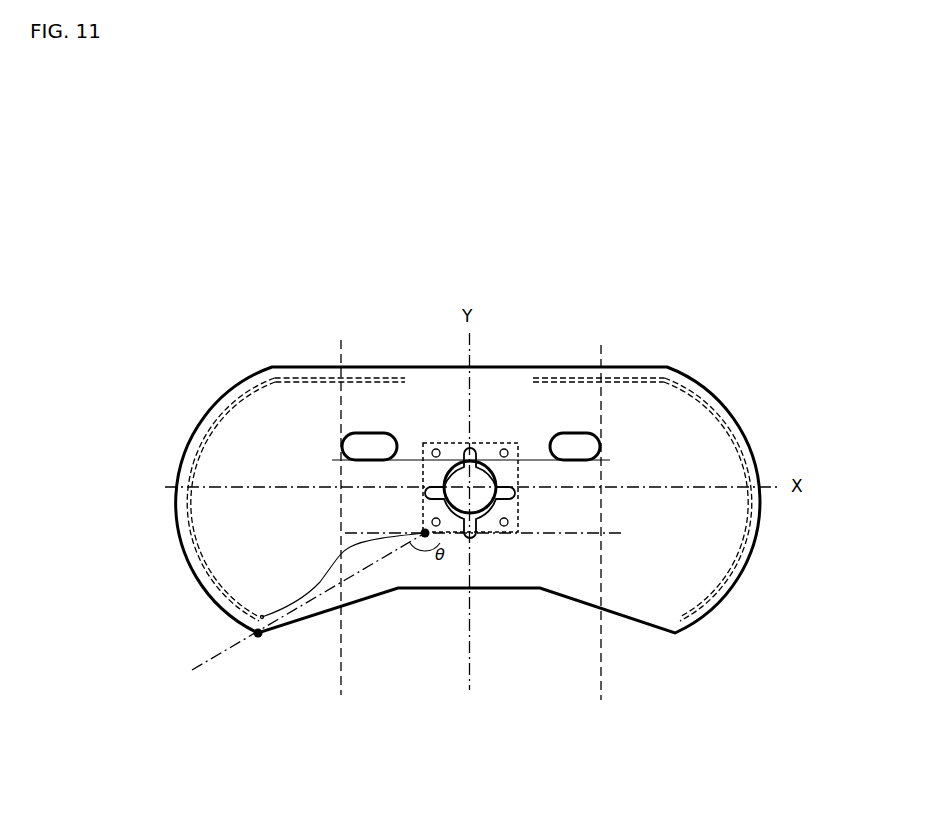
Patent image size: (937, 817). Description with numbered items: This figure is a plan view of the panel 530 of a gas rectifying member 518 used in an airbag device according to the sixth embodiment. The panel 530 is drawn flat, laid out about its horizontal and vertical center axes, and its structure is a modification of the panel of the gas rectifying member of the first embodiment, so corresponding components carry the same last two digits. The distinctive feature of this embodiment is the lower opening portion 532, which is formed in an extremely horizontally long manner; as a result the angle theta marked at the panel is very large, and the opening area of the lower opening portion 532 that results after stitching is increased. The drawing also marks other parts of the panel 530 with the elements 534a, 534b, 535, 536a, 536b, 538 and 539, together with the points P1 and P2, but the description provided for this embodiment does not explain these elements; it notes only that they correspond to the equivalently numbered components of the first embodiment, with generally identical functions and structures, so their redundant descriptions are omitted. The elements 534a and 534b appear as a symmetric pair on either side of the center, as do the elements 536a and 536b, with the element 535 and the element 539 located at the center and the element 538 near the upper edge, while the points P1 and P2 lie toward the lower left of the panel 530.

The gas rectifying member 518 is at (665, 337).
The panel 530 is at (323, 367).
The lower opening portion 532 is at (592, 608).
The left elongated hole 534a is at (370, 432).
The right elongated hole 534b is at (575, 438).
The analog stick unit 535 is at (510, 477).
The left grip portion 536a is at (223, 408).
The right grip portion 536b is at (717, 602).
The upper housing surface 538 is at (493, 376).
The mounting area 539 is at (422, 504).
The point P1 is at (258, 637).
The point P2 is at (262, 617).